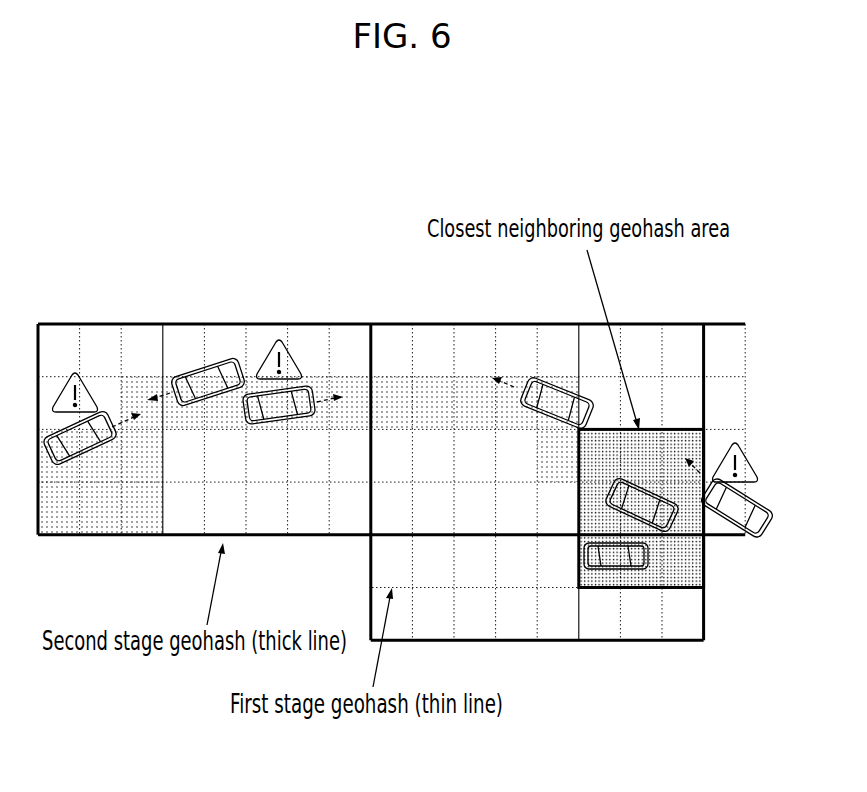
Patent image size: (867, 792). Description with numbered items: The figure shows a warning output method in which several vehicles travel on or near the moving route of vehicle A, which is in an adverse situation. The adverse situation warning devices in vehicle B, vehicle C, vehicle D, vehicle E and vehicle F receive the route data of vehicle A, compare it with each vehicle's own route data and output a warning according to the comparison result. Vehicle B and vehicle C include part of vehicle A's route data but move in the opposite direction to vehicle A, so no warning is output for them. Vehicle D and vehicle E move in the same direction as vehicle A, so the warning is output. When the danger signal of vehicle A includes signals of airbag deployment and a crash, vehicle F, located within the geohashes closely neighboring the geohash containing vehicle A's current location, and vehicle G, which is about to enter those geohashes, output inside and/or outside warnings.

The vehicle A is at (642, 505).
The vehicle B is at (543, 403).
The vehicle C is at (196, 382).
The vehicle D is at (91, 438).
The vehicle E is at (292, 404).
The vehicle F is at (616, 556).
The vehicle G is at (730, 498).